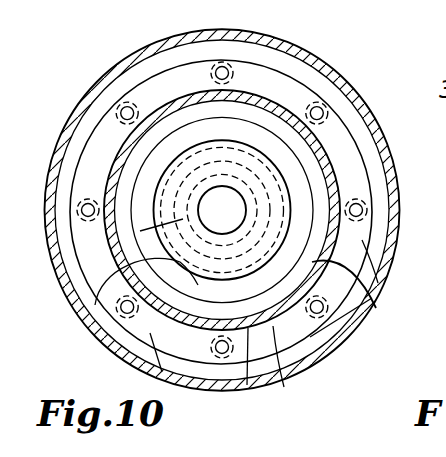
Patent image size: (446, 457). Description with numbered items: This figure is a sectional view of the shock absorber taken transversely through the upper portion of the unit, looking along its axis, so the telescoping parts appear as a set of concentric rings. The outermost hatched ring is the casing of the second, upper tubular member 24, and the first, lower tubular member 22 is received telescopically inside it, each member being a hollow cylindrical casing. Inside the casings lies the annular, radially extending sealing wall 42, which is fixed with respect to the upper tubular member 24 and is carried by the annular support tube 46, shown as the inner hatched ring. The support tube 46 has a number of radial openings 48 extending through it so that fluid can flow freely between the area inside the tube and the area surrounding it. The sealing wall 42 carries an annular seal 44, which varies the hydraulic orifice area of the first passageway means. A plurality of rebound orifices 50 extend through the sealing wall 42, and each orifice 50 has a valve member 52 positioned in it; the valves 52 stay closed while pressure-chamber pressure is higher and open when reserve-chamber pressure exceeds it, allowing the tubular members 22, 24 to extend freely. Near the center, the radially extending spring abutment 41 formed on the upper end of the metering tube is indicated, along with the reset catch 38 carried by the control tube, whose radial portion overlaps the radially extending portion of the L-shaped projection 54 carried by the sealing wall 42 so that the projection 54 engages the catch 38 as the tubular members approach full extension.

The first tubular member 22 is at (368, 160).
The second tubular member 24 is at (362, 110).
The reset catch 38 is at (95, 322).
The spring abutment 41 is at (125, 248).
The sealing wall 42 is at (372, 309).
The annular seal 44 is at (445, 240).
The support tube 46 is at (284, 387).
The radial openings 48 is at (247, 385).
The rebound orifices 50 is at (338, 298).
The valve member 52 is at (322, 352).
The projection 54 is at (193, 290).